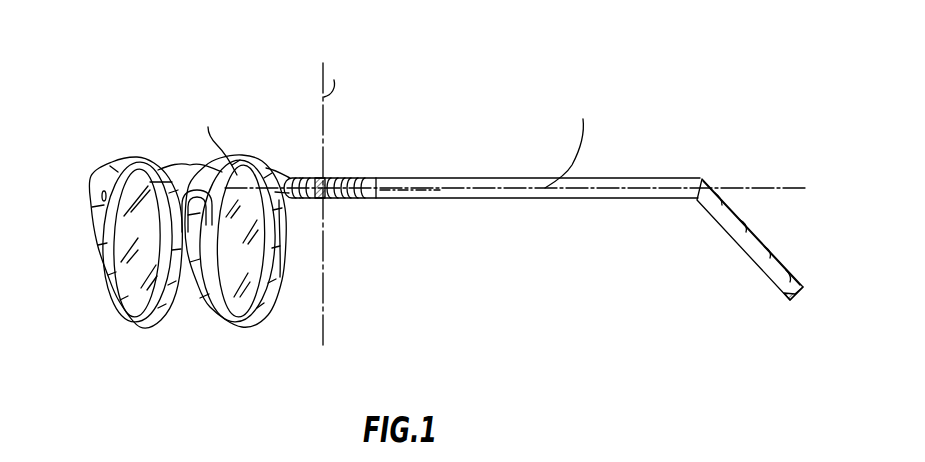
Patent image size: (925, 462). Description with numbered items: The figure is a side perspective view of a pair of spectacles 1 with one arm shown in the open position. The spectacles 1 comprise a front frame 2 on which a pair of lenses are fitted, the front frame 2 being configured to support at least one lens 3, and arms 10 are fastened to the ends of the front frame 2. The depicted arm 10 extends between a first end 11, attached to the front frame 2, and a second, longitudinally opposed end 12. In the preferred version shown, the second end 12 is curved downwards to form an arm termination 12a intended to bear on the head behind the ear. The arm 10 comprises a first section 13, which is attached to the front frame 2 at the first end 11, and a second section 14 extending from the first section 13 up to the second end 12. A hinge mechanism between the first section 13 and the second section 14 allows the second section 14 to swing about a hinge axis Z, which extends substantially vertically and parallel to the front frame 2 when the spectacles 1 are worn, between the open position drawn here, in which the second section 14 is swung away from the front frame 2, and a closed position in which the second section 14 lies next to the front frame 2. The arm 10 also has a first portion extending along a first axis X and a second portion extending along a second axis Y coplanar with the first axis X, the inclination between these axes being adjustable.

The spectacles 1 is at (463, 108).
The front frame 2 is at (188, 168).
The lens 3 is at (133, 283).
The arm 10 is at (637, 177).
The first end 11 is at (295, 200).
The second end 12 is at (800, 275).
The arm termination 12a is at (713, 228).
The first section 13 is at (305, 168).
The second section 14 is at (423, 176).